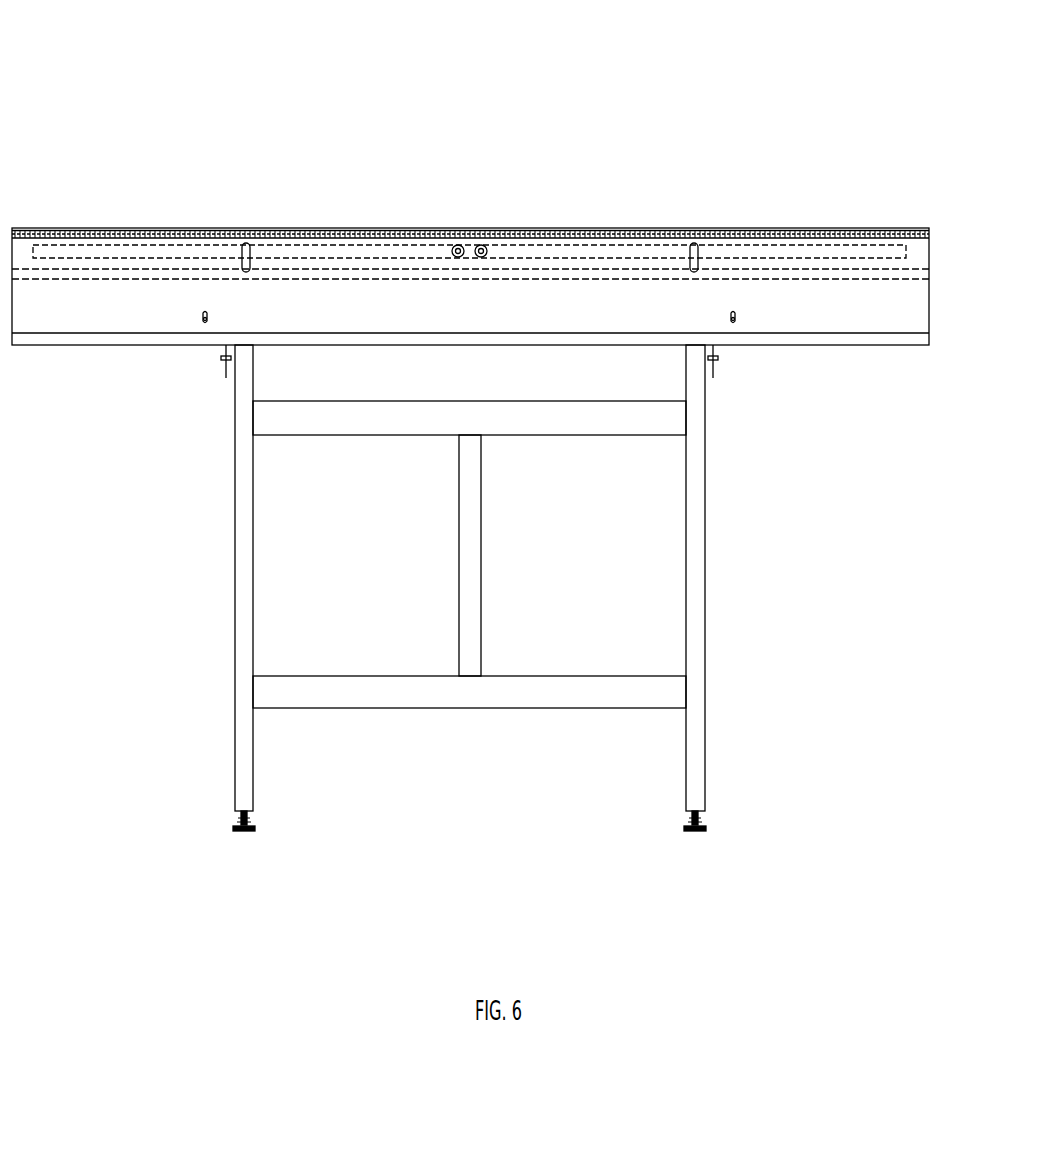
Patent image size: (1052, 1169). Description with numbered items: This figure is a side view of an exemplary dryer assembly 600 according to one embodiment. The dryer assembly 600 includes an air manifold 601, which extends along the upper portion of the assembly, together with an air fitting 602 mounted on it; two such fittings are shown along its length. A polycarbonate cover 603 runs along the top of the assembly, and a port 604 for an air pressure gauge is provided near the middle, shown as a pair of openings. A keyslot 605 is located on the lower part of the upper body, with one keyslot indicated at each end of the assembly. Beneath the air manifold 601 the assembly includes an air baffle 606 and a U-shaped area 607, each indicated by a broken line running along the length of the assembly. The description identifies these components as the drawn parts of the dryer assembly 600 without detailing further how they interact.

The dryer assembly 600 is at (99, 70).
The air manifold 601 is at (182, 248).
The air fitting 602 is at (244, 243).
The polycarbonate cover 603 is at (342, 230).
The port 604 is at (478, 228).
The keyslot 605 is at (463, 448).
The air baffle 606 is at (470, 353).
The U-shaped area 607 is at (470, 391).